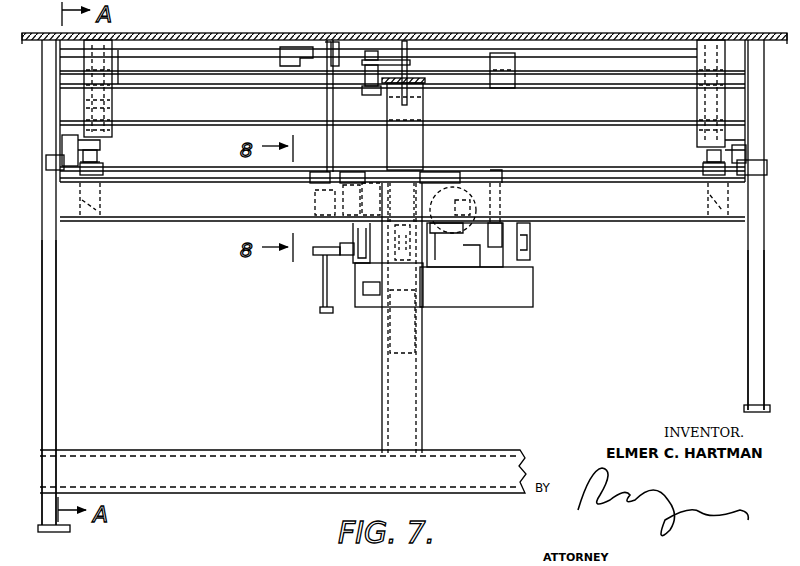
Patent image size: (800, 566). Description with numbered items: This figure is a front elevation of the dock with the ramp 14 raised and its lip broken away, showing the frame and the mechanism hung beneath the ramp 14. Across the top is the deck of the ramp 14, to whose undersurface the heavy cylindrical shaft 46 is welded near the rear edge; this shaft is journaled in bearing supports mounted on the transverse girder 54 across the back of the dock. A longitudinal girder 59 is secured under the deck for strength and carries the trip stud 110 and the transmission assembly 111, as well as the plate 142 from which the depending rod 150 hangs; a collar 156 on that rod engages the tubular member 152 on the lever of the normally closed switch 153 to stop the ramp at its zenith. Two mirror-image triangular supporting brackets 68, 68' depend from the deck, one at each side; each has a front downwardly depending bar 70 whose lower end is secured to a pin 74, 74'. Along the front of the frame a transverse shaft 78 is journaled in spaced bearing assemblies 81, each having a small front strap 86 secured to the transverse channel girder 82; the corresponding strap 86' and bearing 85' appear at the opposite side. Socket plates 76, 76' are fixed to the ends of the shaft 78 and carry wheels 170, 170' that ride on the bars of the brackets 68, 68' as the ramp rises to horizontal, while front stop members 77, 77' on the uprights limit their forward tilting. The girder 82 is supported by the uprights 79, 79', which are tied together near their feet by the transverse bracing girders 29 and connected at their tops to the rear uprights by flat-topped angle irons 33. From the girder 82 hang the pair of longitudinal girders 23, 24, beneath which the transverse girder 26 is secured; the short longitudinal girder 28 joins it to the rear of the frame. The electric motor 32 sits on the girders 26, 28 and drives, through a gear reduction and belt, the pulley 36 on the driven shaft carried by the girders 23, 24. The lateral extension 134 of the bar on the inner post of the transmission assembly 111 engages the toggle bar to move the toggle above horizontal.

The ramp 14 is at (290, 35).
The angle irons 33 is at (32, 38).
The cylindrical shaft 46 is at (587, 51).
The transverse girder 54 is at (600, 118).
The longitudinal girder 59 is at (410, 63).
The triangular supporting bracket 68 is at (118, 112).
The triangular supporting bracket 68' is at (696, 111).
The downwardly depending bar 70 is at (112, 98).
The pin 74 is at (112, 145).
The pin 74' is at (700, 145).
The socket plate 76 is at (45, 149).
The socket plate 76' is at (761, 149).
The front stop member 77 is at (36, 168).
The front stop member 77' is at (764, 171).
The shaft 78 is at (179, 175).
The upright 79 is at (63, 381).
The upright 79' is at (735, 330).
The bearing assembly 81 is at (96, 219).
The transverse girder 82 is at (617, 208).
The pin 85' is at (705, 220).
The front strap 86 is at (103, 190).
The guide block 86' is at (703, 190).
The trip stud 110 is at (368, 96).
The transmission assembly 111 is at (432, 158).
The plate 142 is at (339, 47).
The depending rod 150 is at (333, 145).
The wheel 170 is at (108, 159).
The wheel 170' is at (683, 162).
The pulley 36 is at (503, 168).
The longitudinal girder 23 is at (367, 241).
The longitudinal girder 24 is at (530, 240).
The transverse girder 26 is at (533, 290).
The short longitudinal girder 28 is at (450, 300).
The transverse bracing girders 29 is at (497, 463).
The electric motor 32 is at (490, 236).
The lateral extension 134 is at (370, 298).
The tubular member 152 is at (313, 252).
The switch 153 is at (343, 253).
The collar 156 is at (320, 312).